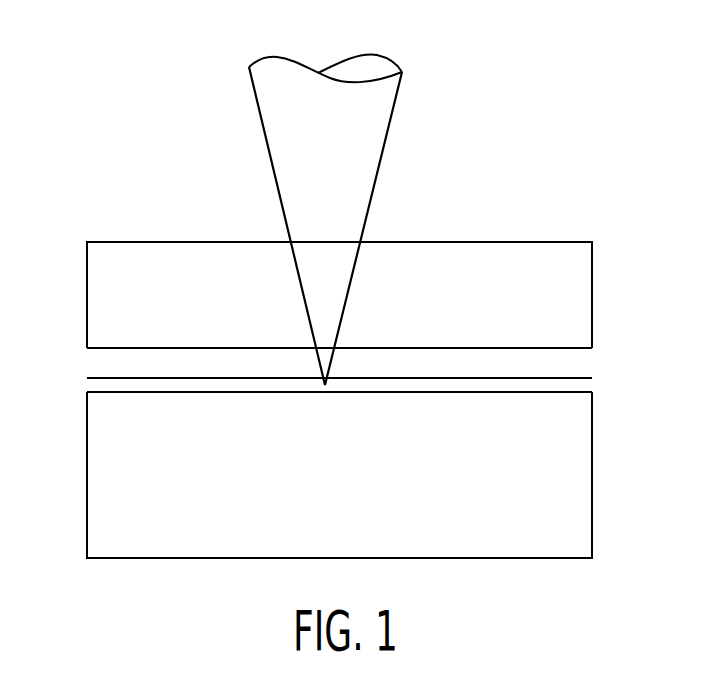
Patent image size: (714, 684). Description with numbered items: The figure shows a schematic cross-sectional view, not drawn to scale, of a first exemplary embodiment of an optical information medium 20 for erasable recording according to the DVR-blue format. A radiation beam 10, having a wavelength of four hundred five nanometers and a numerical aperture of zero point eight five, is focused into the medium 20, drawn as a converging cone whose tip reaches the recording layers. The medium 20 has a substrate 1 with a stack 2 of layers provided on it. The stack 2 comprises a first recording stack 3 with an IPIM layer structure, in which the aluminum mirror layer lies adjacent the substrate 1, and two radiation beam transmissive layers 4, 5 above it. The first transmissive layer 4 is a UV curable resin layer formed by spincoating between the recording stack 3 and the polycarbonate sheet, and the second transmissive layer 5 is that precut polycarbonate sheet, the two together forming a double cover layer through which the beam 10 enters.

The substrate 1 is at (575, 487).
The stack of layers 2 is at (80, 239).
The first recording stack 3 is at (577, 387).
The first transmissive layer 4 is at (577, 363).
The second transmissive layer 5 is at (577, 290).
The radiation beam 10 is at (367, 155).
The optical information medium 20 is at (516, 140).